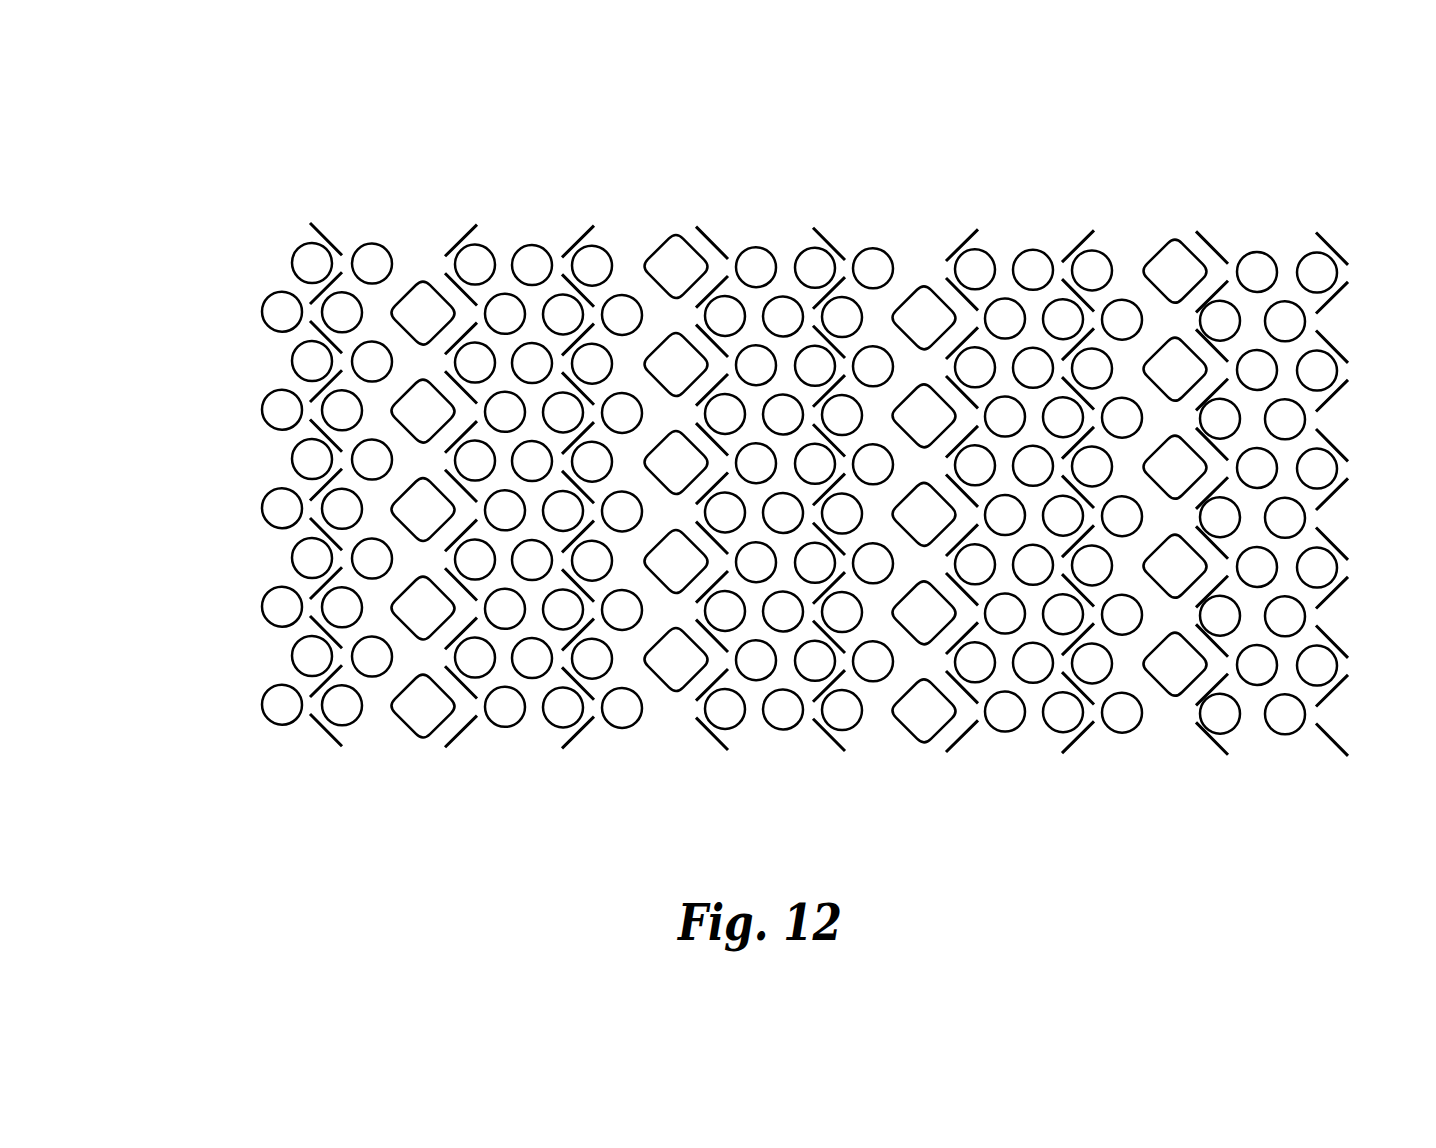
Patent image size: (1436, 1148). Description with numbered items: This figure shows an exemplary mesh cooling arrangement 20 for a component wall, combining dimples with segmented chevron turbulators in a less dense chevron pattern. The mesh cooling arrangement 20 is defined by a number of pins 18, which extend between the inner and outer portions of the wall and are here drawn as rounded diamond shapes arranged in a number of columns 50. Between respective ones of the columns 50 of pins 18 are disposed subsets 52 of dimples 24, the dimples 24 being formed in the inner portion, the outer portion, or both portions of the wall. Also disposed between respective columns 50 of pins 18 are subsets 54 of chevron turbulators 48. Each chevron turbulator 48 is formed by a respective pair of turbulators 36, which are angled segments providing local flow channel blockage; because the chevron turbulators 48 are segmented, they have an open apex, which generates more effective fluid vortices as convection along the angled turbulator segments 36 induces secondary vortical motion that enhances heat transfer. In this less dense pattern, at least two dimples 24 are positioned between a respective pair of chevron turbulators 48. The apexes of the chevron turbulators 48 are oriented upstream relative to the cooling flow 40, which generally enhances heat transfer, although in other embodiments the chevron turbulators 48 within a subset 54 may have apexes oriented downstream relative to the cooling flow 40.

The pins 18 is at (1171, 254).
The mesh cooling arrangement 20 is at (1320, 174).
The dimples 24 is at (1040, 254).
The turbulators 36 is at (1340, 750).
The cooling flow 40 is at (246, 472).
The chevron turbulators 48 is at (1365, 669).
The columns 50 is at (415, 745).
The subsets of dimples 52 is at (530, 735).
The subsets of chevron turbulators 54 is at (329, 220).